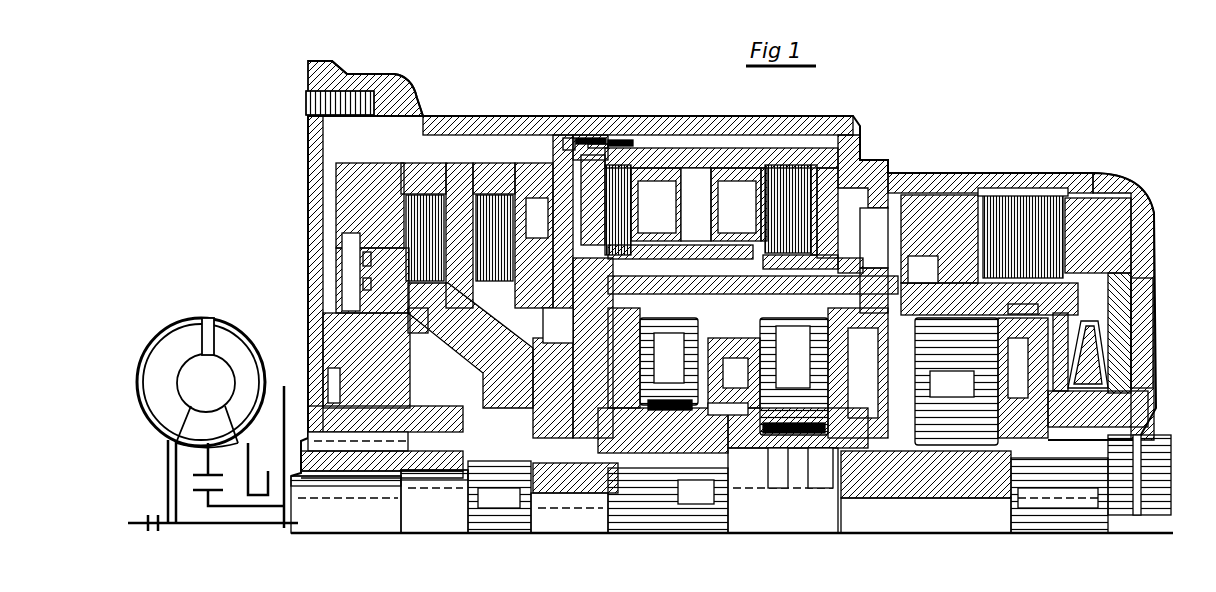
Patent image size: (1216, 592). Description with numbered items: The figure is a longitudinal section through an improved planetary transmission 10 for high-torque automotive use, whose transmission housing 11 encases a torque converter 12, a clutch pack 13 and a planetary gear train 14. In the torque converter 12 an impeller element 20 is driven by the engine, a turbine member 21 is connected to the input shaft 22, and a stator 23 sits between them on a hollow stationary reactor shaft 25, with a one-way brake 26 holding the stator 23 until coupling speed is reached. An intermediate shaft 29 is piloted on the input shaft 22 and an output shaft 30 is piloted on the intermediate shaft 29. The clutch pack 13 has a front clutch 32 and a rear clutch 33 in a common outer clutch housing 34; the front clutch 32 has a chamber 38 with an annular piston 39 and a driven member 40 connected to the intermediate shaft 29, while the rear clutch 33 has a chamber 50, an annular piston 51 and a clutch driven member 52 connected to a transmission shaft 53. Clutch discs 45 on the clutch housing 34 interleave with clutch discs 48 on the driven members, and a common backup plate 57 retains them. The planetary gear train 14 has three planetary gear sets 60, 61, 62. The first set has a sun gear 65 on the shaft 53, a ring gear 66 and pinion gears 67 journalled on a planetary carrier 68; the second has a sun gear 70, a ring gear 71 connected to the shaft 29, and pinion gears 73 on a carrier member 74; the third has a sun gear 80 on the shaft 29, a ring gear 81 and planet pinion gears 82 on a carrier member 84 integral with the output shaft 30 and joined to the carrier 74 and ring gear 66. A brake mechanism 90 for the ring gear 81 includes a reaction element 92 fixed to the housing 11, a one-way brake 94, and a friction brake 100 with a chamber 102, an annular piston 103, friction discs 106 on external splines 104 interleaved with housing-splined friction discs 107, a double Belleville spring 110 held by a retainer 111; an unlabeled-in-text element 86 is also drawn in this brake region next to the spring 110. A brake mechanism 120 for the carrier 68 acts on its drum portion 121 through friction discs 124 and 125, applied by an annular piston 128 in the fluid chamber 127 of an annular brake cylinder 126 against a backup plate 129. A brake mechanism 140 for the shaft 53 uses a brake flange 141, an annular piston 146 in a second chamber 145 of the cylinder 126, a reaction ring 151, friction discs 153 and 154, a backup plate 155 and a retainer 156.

The planetary transmission 10 is at (939, 133).
The transmission housing 11 is at (380, 70).
The torque converter 12 is at (202, 298).
The clutch pack 13 is at (462, 145).
The planetary gear train 14 is at (865, 203).
The pump or impeller element 20 is at (235, 388).
The turbine member 21 is at (144, 388).
The input shaft 22 is at (272, 522).
The stator or reaction element 23 is at (190, 421).
The hollow stationary reactor shaft 25 is at (247, 470).
The one-way brake 26 is at (197, 462).
The intermediate shaft 29 is at (700, 526).
The output shaft 30 is at (1143, 505).
The front clutch 32 is at (416, 170).
The rear clutch 33 is at (489, 170).
The outer clutch housing 34 is at (378, 157).
The chamber 38 is at (360, 229).
The annular piston 39 is at (352, 275).
The driven member 40 is at (499, 497).
The clutch discs 45 is at (352, 251).
The clutch discs 48 is at (362, 300).
The chamber 50 is at (538, 345).
The annular piston 51 is at (519, 335).
The clutch driven member 52 is at (540, 376).
The transmission shaft 53 is at (692, 450).
The backup plate or reaction member 57 is at (456, 160).
The first planetary gear set 60 is at (668, 412).
The second planetary gear set 61 is at (784, 446).
The third planetary gear set 62 is at (952, 445).
The sun gear 65 is at (702, 404).
The ring gear 66 is at (669, 361).
The planetary pinion gears 67 is at (652, 375).
The planetary carrier 68 is at (622, 402).
The sun gear 70 is at (783, 490).
The ring gear 71 is at (794, 376).
The planetary pinion gears 73 is at (776, 375).
The planetary carrier member 74 is at (818, 450).
The sun gear 80 is at (892, 444).
The ring gear 81 is at (1015, 305).
The planet pinion gears 82 is at (930, 388).
The carrier member 84 is at (866, 270).
The spring 86 is at (1036, 360).
The brake mechanism 90 is at (1032, 180).
The reaction element 92 is at (945, 190).
The one-way brake 94 is at (920, 252).
The friction brake 100 is at (1078, 188).
The chamber 102 is at (1128, 280).
The annular piston 103 is at (1118, 305).
The external splines 104 is at (978, 278).
The friction discs 106 is at (1062, 226).
The friction discs 107 is at (1002, 190).
The double Belleville spring mechanism 110 is at (1034, 352).
The retainer 111 is at (1072, 396).
The brake mechanism 120 is at (808, 152).
The drum portion 121 is at (822, 255).
The friction discs 124 is at (822, 168).
The friction discs 125 is at (782, 155).
The annular brake cylinder 126 is at (690, 150).
The fluid chamber 127 is at (708, 196).
The annular piston 128 is at (735, 150).
The backup plate 129 is at (838, 180).
The brake mechanism 140 is at (635, 150).
The brake flange 141 is at (626, 260).
The second chamber 145 is at (672, 196).
The annular piston 146 is at (680, 138).
The reaction ring 151 is at (618, 132).
The friction discs 153 is at (552, 188).
The friction discs 154 is at (594, 136).
The backup plate 155 is at (582, 128).
The retainer 156 is at (560, 130).